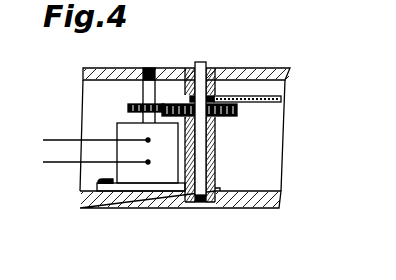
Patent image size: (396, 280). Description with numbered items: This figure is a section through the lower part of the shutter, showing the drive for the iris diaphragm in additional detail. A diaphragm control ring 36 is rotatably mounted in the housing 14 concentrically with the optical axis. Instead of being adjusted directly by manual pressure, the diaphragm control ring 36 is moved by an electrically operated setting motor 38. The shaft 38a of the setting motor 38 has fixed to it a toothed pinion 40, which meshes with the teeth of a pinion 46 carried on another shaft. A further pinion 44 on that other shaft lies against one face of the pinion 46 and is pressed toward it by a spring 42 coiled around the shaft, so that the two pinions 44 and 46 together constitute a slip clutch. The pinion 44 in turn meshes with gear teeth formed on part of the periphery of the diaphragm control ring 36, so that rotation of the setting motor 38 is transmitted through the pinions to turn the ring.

The housing 14 is at (279, 203).
The diaphragm control ring 36 is at (282, 100).
The setting motor 38 is at (143, 178).
The shaft 38a is at (149, 68).
The toothed pinion 40 is at (127, 108).
The spring 42 is at (212, 68).
The pinion 44 is at (185, 68).
The pinion 46 is at (237, 107).